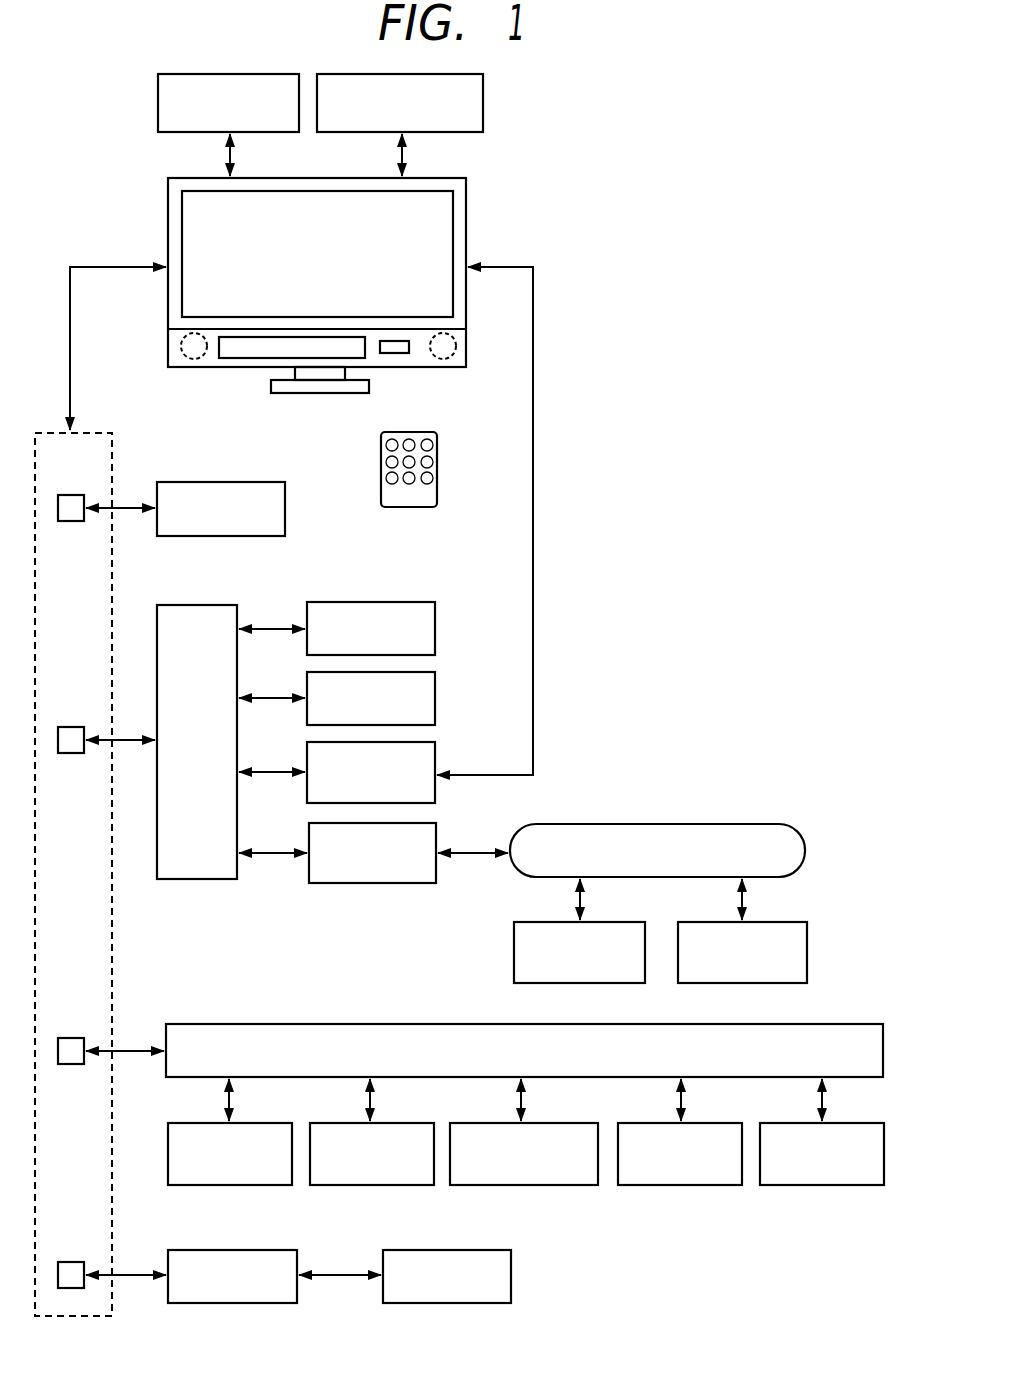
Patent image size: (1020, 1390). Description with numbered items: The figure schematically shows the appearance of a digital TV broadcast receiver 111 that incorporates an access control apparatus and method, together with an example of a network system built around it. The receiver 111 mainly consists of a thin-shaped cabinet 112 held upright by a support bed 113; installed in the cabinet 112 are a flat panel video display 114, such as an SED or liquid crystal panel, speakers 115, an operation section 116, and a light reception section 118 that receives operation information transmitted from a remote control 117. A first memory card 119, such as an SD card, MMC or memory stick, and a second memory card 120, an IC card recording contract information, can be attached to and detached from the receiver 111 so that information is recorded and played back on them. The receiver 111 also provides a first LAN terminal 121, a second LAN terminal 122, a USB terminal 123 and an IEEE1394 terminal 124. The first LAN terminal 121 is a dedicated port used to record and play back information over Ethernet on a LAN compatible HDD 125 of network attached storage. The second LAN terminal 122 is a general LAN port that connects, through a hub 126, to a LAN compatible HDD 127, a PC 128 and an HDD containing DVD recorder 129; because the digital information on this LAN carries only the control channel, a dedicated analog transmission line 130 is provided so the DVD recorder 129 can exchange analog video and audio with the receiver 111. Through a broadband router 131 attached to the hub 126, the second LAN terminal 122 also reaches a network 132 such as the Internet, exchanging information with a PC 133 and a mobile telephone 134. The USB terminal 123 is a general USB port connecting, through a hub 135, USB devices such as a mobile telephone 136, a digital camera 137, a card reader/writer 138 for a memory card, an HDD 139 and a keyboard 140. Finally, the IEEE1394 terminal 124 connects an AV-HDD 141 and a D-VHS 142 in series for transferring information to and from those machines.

The digital TV broadcast receiver 111 is at (165, 205).
The cabinet 112 is at (466, 196).
The support bed 113 is at (317, 394).
The flat panel video display 114 is at (445, 240).
The speakers 115 is at (194, 361).
The operation section 116 is at (245, 359).
The remote control 117 is at (407, 508).
The light reception section 118 is at (395, 355).
The first memory card 119 is at (158, 98).
The second memory card 120 is at (484, 98).
The first LAN terminal 121 is at (71, 495).
The second LAN terminal 122 is at (71, 727).
The USB terminal 123 is at (71, 1038).
The IEEE1394 terminal 124 is at (71, 1262).
The LAN compatible HDD 125 is at (286, 503).
The hub 126 is at (197, 604).
The LAN compatible HDD 127 is at (436, 623).
The PC 128 is at (436, 700).
The DVD recorder 129 is at (436, 752).
The dedicated analog transmission line 130 is at (533, 580).
The broadband router 131 is at (382, 884).
The network 132 is at (699, 824).
The PC 133 is at (513, 942).
The mobile telephone 134 is at (808, 949).
The hub 135 is at (360, 1024).
The mobile telephone 136 is at (230, 1186).
The digital camera 137 is at (374, 1186).
The card reader/writer 138 is at (529, 1186).
The HDD 139 is at (685, 1186).
The keyboard 140 is at (820, 1186).
The AV-HDD 141 is at (298, 1292).
The D-VHS 142 is at (512, 1275).